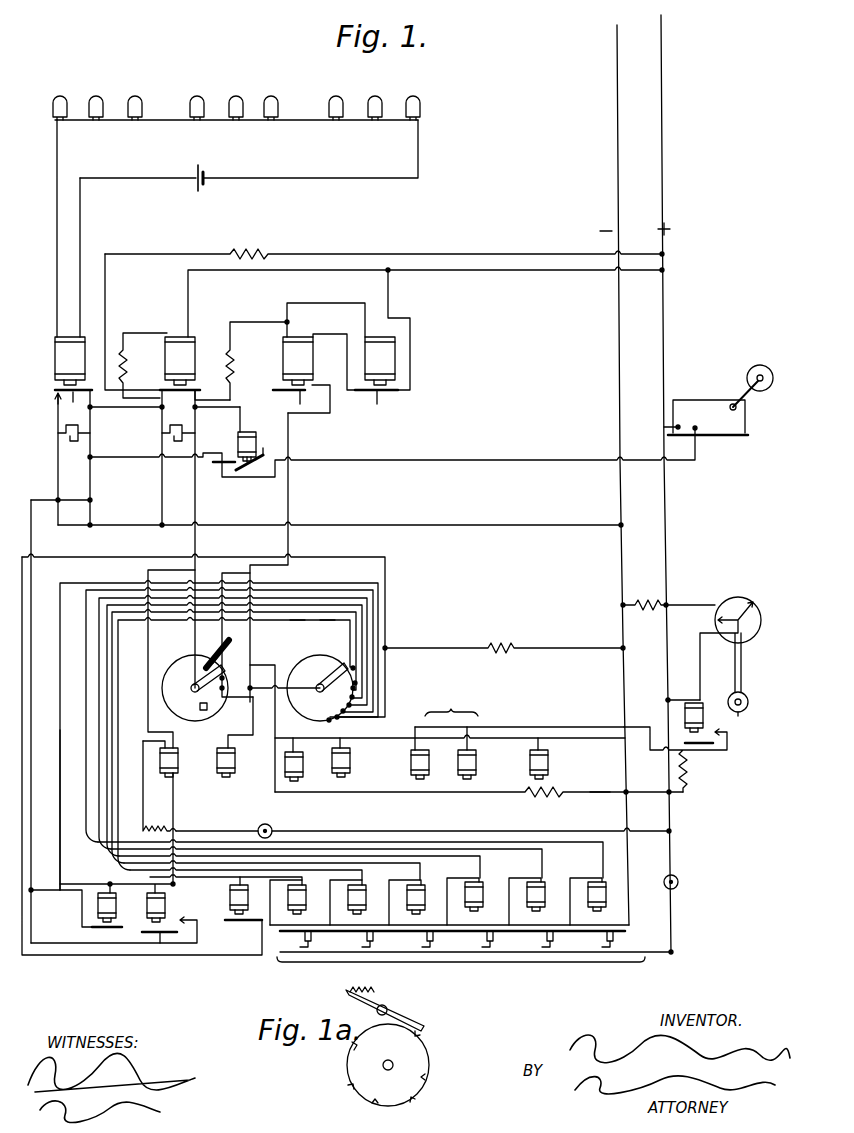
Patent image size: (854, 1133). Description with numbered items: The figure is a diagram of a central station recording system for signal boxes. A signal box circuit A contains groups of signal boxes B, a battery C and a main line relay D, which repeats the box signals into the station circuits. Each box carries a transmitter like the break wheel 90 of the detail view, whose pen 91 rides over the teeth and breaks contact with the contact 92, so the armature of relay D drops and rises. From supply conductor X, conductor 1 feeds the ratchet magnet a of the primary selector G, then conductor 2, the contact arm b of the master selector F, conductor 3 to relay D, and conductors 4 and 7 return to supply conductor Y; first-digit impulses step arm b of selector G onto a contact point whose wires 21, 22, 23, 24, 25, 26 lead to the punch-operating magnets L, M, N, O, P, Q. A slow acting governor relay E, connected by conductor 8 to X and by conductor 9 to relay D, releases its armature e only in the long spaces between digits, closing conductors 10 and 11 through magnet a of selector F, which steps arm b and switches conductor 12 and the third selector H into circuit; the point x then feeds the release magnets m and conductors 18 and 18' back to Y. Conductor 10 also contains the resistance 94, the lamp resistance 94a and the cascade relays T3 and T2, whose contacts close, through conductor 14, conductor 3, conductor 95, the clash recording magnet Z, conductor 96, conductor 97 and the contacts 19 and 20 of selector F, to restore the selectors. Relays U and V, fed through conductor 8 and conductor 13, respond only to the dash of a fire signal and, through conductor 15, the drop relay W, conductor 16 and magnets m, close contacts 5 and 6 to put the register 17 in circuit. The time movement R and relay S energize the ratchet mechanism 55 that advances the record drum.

In FIG. 1, the signal boxes B is at (236, 91).
In FIG. 1, the signal box circuit A is at (84, 229).
In FIG. 1, the battery C is at (207, 187).
In FIG. 1, the conductor 14 is at (478, 250).
In FIG. 1, the conductor 8 is at (273, 272).
In FIG. 1, the conductor 13 is at (334, 303).
In FIG. 1, the conductor 9 is at (146, 330).
In FIG. 1, the main line relay D is at (55, 353).
In FIG. 1, the governor relay E is at (180, 361).
In FIG. 1, the slow-acting relay V is at (301, 375).
In FIG. 1, the slow-acting relay U is at (355, 369).
In FIG. 1, the armature of relay E e is at (197, 386).
In FIG. 1, the conductor 15 is at (135, 408).
In FIG. 1, the contact 5 is at (230, 462).
In FIG. 1, the drop relay W is at (257, 443).
In FIG. 1, the contact 6 is at (224, 474).
In FIG. 1, the conductor 4 is at (57, 458).
In FIG. 1, the conductor 3 is at (93, 506).
In FIG. 1, the conductor 95 is at (31, 511).
In FIG. 1, the common return conductor 7 is at (448, 524).
In FIG. 1, the conductor 16 is at (290, 497).
In FIG. 1, the register 17 is at (703, 406).
In FIG. 1, the supply conductor Y is at (614, 475).
In FIG. 1, the supply conductor X is at (671, 483).
In FIG. 1, the wire 23 is at (342, 607).
In FIG. 1, the wire 24 is at (368, 607).
In FIG. 1, the wire 25 is at (373, 620).
In FIG. 1, the wire 26 is at (378, 634).
In FIG. 1, the conductor 97 is at (60, 741).
In FIG. 1, the conductor 11 is at (150, 664).
In FIG. 1, the conductor 18 is at (236, 722).
In FIG. 1, the conductor 2 is at (277, 664).
In FIG. 1, the dividing point x is at (252, 692).
In FIG. 1, the master selector F is at (195, 688).
In FIG. 1, the primary selector G is at (321, 688).
In FIG. 1, the contact 19 is at (218, 652).
In FIG. 1, the contact 20 is at (230, 648).
In FIG. 1, the contact arm b is at (278, 695).
In FIG. 1, the wire 21 is at (298, 622).
In FIG. 1, the wire 22 is at (327, 621).
In FIG. 1, the ratchet magnet a is at (170, 773).
In FIG. 1, the release magnet m is at (227, 773).
In FIG. 1, the magnet-operated ratchet mechanism 55 is at (548, 766).
In FIG. 1, the conductor 18' is at (450, 721).
In FIG. 1, the third selector H is at (451, 700).
In FIG. 1, the conductor 12 is at (373, 793).
In FIG. 1, the conductor 1 is at (597, 792).
In FIG. 1, the time movement R is at (744, 598).
In FIG. 1, the relay S is at (710, 724).
In FIG. 1, the resistance 94 is at (164, 826).
In FIG. 1, the resistance 94a is at (271, 828).
In FIG. 1, the conductor 10 is at (482, 829).
In FIG. 1, the punch-operating magnet L is at (306, 900).
In FIG. 1, the punch-operating magnet M is at (364, 898).
In FIG. 1, the punch-operating magnet N is at (424, 896).
In FIG. 1, the punch-operating magnet O is at (482, 893).
In FIG. 1, the punch-operating magnet P is at (544, 892).
In FIG. 1, the punch-operating magnet Q is at (605, 892).
In FIG. 1, the slow action relay T3 is at (97, 920).
In FIG. 1, the slow action relay T2 is at (147, 920).
In FIG. 1, the clash recording magnet Z is at (228, 912).
In FIG. 1, the conductor 96 is at (226, 888).
In FIG. 1A, the break wheel 90 is at (388, 1065).
In FIG. 1A, the pen 91 is at (425, 1010).
In FIG. 1A, the contact 92 is at (388, 996).